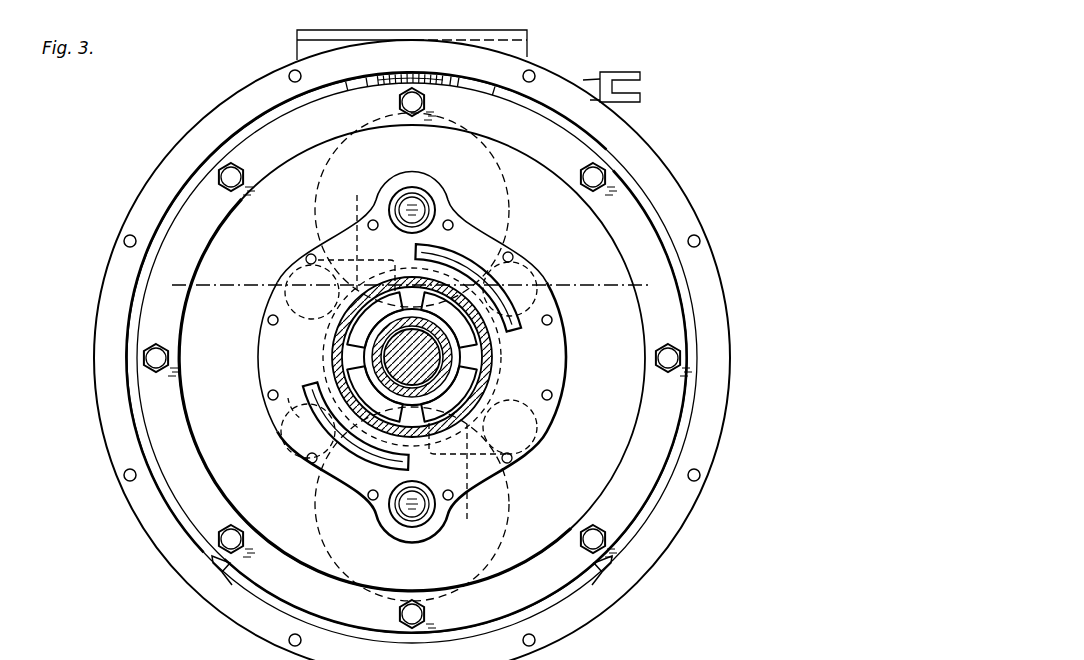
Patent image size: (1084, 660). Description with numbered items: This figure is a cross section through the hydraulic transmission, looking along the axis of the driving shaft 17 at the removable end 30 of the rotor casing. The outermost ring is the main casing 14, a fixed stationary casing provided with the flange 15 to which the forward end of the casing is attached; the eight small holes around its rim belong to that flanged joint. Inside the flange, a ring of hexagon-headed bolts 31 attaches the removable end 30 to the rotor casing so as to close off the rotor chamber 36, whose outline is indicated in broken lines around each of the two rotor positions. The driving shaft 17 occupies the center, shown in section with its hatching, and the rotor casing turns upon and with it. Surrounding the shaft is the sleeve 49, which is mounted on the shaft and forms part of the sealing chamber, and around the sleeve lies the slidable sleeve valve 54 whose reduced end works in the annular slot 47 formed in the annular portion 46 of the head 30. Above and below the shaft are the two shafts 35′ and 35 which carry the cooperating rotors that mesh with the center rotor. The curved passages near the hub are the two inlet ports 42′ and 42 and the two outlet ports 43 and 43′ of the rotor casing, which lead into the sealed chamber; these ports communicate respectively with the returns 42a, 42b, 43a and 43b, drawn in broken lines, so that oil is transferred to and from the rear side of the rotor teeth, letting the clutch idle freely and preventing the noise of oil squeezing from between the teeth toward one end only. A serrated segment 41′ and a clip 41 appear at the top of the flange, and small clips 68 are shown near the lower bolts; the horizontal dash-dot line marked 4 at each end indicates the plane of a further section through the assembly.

The main casing 14 is at (708, 229).
The flange 15 is at (712, 290).
The bolts 31 is at (148, 359).
The serrated locking segment 41′ is at (440, 72).
The clamp clip 41 is at (590, 79).
The retaining clips 68 is at (213, 562).
The section line 4- 4 is at (409, 285).
The removable end 30 is at (562, 348).
The rotor chamber 36 is at (312, 213).
The outlet port 43 is at (378, 222).
The outlet port 43′ is at (457, 514).
The return 43a is at (286, 277).
The return 43b is at (538, 432).
The return 42a is at (292, 450).
The return 42b is at (543, 268).
The inlet port 42′ is at (458, 253).
The inlet port 42 is at (377, 453).
The shaft 35′ is at (424, 206).
The shaft 35 is at (407, 514).
The sleeve valve 54 is at (502, 363).
The sleeve 49 is at (333, 349).
The annular slot 47 is at (331, 370).
The driving shaft 17 is at (432, 372).
The annular portion 46 is at (300, 409).